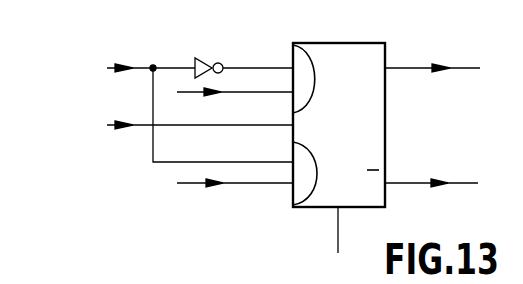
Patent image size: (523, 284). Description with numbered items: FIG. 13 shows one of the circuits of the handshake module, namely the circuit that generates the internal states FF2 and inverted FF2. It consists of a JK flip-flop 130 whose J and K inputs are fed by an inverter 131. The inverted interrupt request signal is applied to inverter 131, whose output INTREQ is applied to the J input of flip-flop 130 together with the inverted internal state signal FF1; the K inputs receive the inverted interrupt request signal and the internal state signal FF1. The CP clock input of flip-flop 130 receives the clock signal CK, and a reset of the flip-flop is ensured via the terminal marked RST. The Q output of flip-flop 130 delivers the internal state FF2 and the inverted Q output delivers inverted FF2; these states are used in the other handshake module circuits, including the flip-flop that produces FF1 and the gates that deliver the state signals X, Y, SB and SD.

The flip-flop 130 is at (366, 123).
The inverter 131 is at (204, 59).
The interrupt request signal INTREQ is at (110, 66).
The clock signal CK is at (108, 128).
The internal state signal FF1 is at (236, 93).
The internal state signal FF2 is at (458, 65).
The reset terminal RST is at (338, 221).